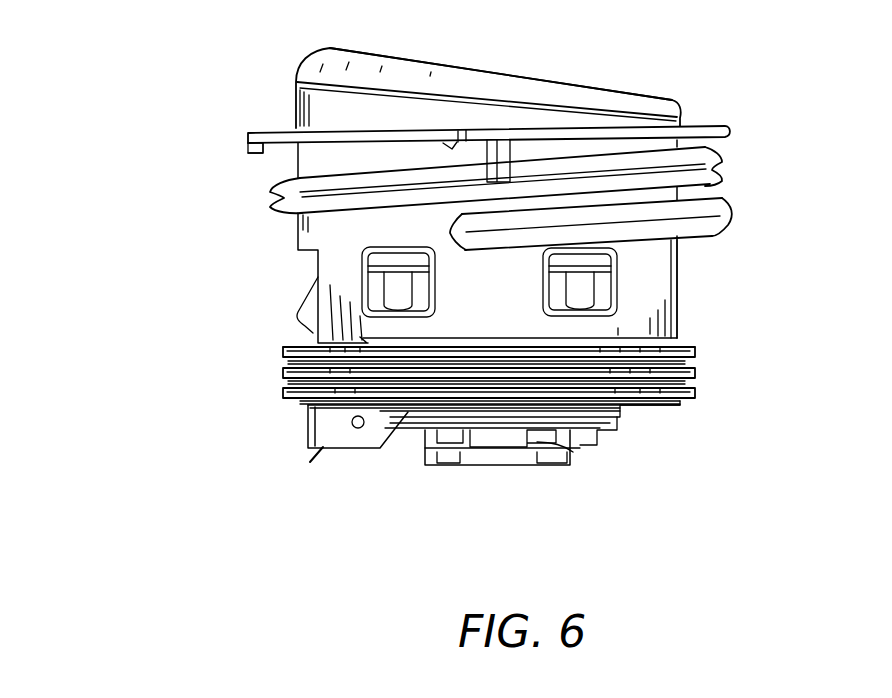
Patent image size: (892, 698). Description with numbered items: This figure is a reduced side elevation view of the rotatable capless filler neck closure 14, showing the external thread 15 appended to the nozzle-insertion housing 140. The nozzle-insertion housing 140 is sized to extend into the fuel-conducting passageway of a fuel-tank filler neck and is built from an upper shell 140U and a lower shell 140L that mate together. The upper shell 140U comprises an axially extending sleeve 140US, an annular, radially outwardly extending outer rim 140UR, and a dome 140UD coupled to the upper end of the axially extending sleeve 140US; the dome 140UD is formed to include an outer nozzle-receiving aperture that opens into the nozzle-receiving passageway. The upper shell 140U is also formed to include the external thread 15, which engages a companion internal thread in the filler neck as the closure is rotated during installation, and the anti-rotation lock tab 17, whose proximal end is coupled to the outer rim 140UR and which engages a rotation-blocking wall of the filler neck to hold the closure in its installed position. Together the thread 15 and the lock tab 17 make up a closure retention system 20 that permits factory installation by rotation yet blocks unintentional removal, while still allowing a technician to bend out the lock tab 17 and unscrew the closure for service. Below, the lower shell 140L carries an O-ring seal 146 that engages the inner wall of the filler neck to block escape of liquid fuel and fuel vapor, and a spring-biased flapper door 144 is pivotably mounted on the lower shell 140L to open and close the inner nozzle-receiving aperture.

The rotatable capless filler neck closure 14 is at (638, 82).
The dome 140UD is at (406, 44).
The outer rim 140UR is at (263, 133).
The anti-rotation lock tab 17 is at (226, 149).
The closure retention system 20 is at (167, 194).
The external thread 15 is at (262, 197).
The axially extending sleeve 140US is at (683, 270).
The upper shell 140U is at (696, 304).
The O-ring seal 146 is at (271, 384).
The lower shell 140L is at (658, 425).
The spring-biased flapper door 144 is at (443, 480).
The nozzle-insertion housing 140 is at (760, 400).